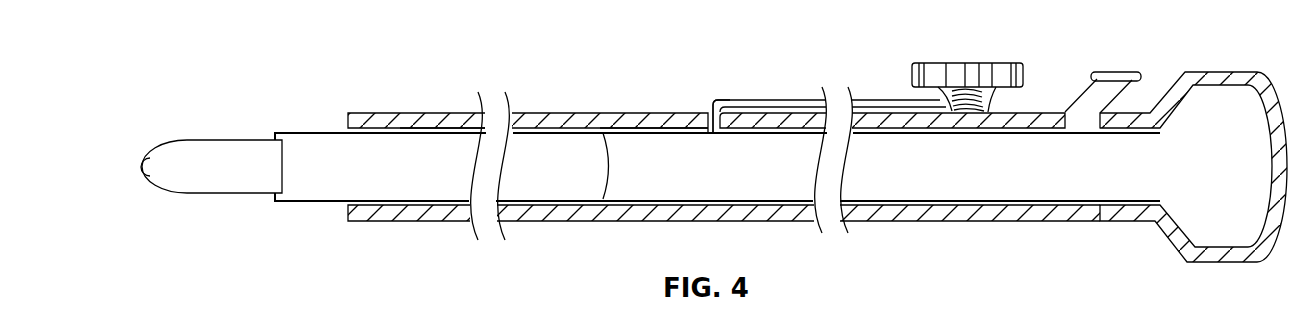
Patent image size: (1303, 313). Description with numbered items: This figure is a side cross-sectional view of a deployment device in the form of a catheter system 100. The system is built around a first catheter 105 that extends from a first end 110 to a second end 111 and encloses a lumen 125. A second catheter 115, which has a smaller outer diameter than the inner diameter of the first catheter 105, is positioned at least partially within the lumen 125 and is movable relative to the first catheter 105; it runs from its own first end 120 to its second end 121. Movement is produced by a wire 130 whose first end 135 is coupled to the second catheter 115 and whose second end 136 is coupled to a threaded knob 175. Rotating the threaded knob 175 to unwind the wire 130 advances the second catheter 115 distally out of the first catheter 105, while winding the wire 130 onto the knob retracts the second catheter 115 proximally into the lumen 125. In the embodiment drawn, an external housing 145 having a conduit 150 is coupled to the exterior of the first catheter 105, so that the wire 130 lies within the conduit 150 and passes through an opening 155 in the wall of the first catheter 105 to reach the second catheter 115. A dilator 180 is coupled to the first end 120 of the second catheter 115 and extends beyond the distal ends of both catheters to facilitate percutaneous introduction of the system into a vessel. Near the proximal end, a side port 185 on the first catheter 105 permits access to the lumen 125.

The catheter system 100 is at (260, 55).
The first catheter 105 is at (540, 113).
The first end of the first catheter 110 is at (347, 110).
The second end of the first catheter 111 is at (1042, 103).
The second catheter 115 is at (457, 129).
The first end of the second catheter 120 is at (267, 199).
The second end of the second catheter 121 is at (611, 195).
The lumen 125 is at (678, 173).
The wire 130 is at (660, 131).
The first end of the wire 135 is at (603, 133).
The second end of the wire 136 is at (956, 97).
The external housing 145 is at (782, 99).
The conduit 150 is at (887, 100).
The opening 155 is at (710, 112).
The threaded knob 175 is at (992, 70).
The dilator 180 is at (182, 140).
The side port 185 is at (1115, 72).